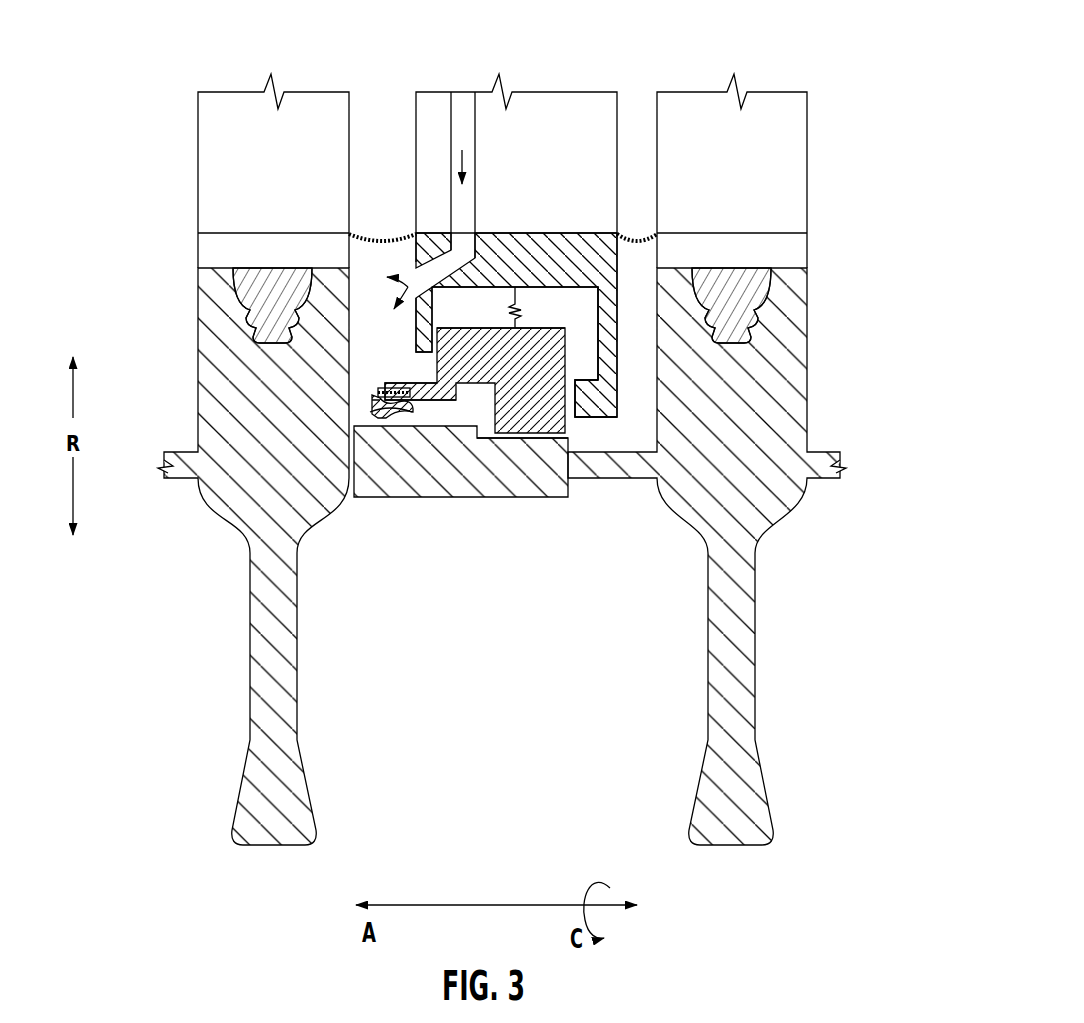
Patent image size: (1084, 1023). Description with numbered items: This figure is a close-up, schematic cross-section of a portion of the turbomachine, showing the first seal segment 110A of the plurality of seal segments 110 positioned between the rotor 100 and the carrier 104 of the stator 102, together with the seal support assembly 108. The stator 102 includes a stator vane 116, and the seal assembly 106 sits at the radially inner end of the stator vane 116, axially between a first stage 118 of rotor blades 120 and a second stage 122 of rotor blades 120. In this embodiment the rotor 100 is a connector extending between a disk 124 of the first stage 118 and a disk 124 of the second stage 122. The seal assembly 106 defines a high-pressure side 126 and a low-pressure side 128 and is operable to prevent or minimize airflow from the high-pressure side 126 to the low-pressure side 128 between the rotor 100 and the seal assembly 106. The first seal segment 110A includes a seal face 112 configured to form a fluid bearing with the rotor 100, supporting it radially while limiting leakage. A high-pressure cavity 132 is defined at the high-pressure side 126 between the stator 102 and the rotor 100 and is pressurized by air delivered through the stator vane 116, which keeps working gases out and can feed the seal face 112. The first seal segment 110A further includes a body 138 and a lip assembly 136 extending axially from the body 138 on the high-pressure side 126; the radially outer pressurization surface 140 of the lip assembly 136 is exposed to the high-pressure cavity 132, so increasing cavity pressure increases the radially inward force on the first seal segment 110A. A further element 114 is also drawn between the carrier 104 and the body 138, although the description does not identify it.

The rotor 100 is at (469, 494).
The stator 102 is at (517, 219).
The carrier 104 is at (605, 273).
The seal assembly 106 is at (548, 311).
The seal support assembly 108 is at (494, 311).
The seal segments 110 is at (605, 286).
The first seal segment 110A is at (419, 286).
The seal face 112 is at (541, 440).
The biasing member 114 is at (516, 302).
The stator vane 116 is at (577, 112).
The first stage 118 is at (229, 65).
The rotor blades 120 is at (502, 134).
The second stage 122 is at (761, 47).
The disk 124 is at (222, 387).
The high-pressure side 126 is at (427, 340).
The low-pressure side 128 is at (583, 370).
The high-pressure cavity 132 is at (366, 353).
The lip assembly 136 is at (365, 395).
The body 138 is at (525, 369).
The outer pressurization surface 140 is at (398, 372).